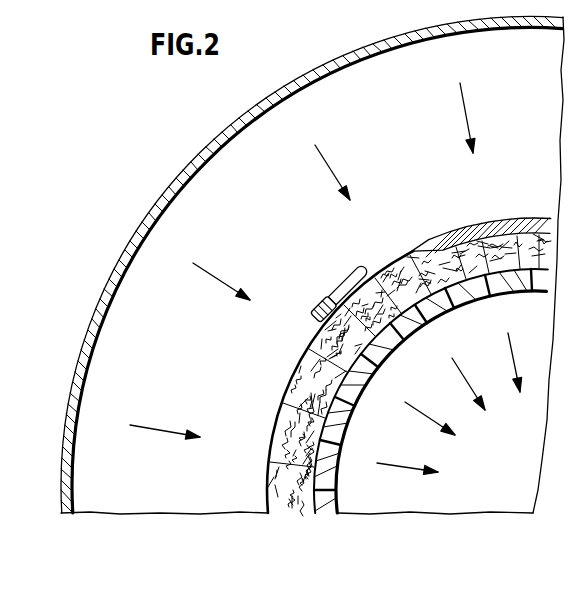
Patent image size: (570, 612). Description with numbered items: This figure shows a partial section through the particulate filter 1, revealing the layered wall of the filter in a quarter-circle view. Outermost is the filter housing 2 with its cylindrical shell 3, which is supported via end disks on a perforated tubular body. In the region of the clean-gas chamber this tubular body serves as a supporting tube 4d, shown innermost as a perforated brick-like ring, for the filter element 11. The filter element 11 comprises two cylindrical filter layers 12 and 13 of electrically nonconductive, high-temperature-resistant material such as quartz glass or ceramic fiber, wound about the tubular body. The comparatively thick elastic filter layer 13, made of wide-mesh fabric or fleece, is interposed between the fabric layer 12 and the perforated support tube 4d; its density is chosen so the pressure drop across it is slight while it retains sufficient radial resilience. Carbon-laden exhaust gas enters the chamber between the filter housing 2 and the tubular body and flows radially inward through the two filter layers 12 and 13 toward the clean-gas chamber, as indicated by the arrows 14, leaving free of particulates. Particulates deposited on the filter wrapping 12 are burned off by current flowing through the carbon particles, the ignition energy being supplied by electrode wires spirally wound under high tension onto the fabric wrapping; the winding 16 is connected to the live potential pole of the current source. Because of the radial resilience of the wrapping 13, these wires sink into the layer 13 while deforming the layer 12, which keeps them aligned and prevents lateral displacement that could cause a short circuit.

The particulate filter 1 is at (312, 264).
The filter housing 2 is at (144, 223).
The cylindrical shell 3 is at (292, 70).
The supporting tube 4d is at (361, 397).
The filter element 11 is at (398, 256).
The filter layer 12 is at (450, 248).
The filter layer 13 is at (523, 250).
The arrows 14 is at (208, 272).
The wire winding 16 is at (325, 306).